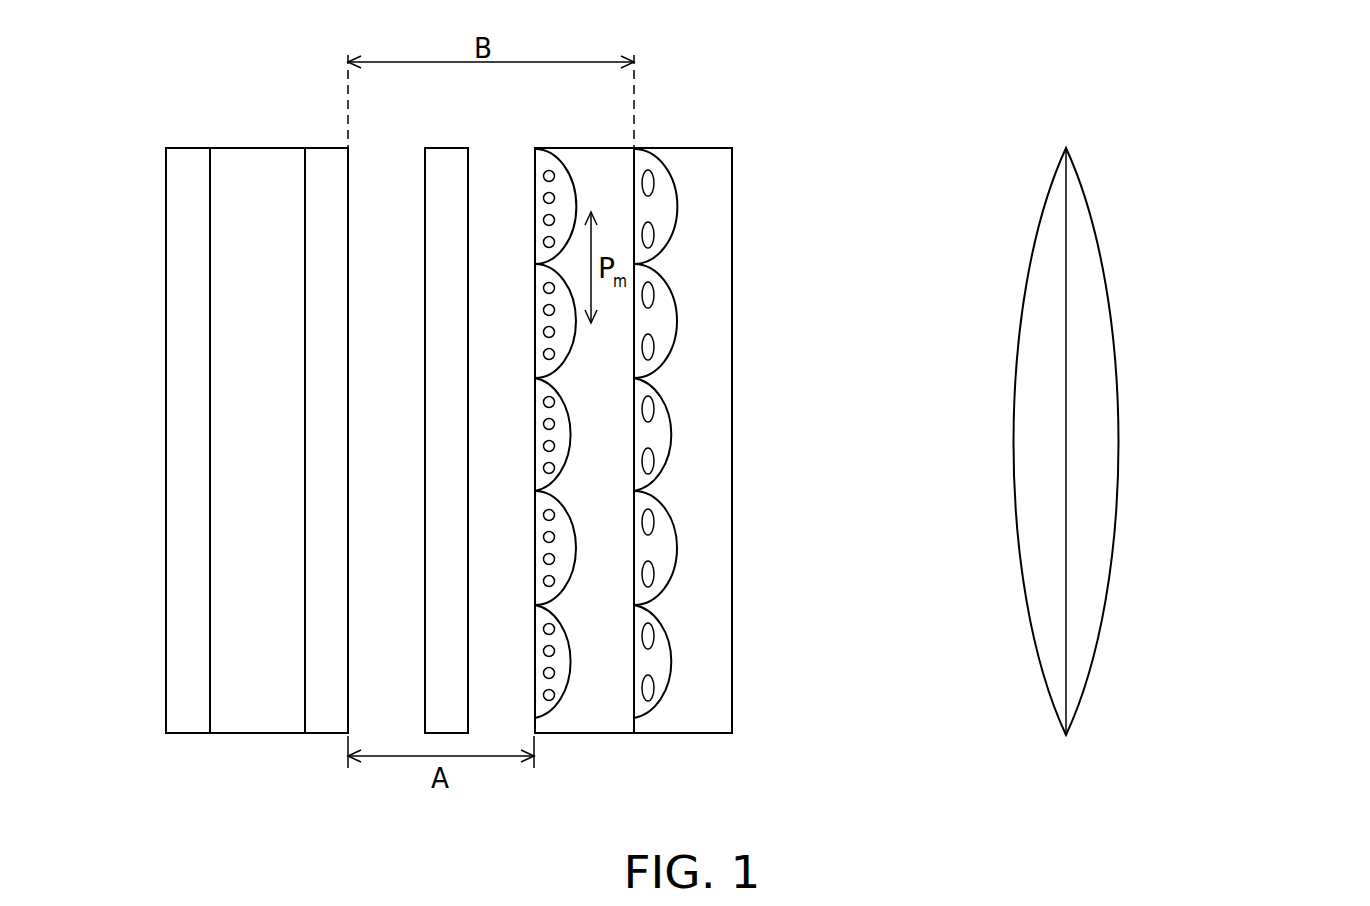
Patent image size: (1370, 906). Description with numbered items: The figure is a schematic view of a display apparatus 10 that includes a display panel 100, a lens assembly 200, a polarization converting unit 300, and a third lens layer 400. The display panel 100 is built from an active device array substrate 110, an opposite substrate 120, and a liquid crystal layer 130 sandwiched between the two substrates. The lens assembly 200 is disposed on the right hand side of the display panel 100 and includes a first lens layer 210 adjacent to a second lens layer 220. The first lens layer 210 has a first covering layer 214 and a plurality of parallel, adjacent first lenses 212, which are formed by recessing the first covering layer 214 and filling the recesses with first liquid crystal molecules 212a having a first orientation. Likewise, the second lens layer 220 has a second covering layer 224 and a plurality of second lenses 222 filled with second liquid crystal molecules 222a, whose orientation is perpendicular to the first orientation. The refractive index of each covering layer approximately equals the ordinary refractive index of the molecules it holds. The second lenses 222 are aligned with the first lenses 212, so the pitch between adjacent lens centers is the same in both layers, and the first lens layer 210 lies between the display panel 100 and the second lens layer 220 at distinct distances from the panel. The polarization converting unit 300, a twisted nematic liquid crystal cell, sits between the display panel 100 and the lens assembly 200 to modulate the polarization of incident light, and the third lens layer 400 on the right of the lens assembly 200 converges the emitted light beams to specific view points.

The display apparatus 10 is at (1122, 813).
The display panel 100 is at (255, 440).
The active device array substrate 110 is at (186, 166).
The opposite substrate 120 is at (324, 166).
The liquid crystal layer 130 is at (258, 166).
The lens assembly 200 is at (943, 421).
The first lens layer 210 is at (913, 431).
The first lenses 212 is at (570, 448).
The first liquid crystal molecules 212a is at (555, 177).
The first covering layer 214 is at (600, 692).
The second lens layer 220 is at (962, 451).
The second lenses 222 is at (666, 451).
The second liquid crystal molecules 222a is at (652, 182).
The second covering layer 224 is at (706, 693).
The polarization converting unit 300 is at (444, 168).
The third lens layer 400 is at (1083, 190).